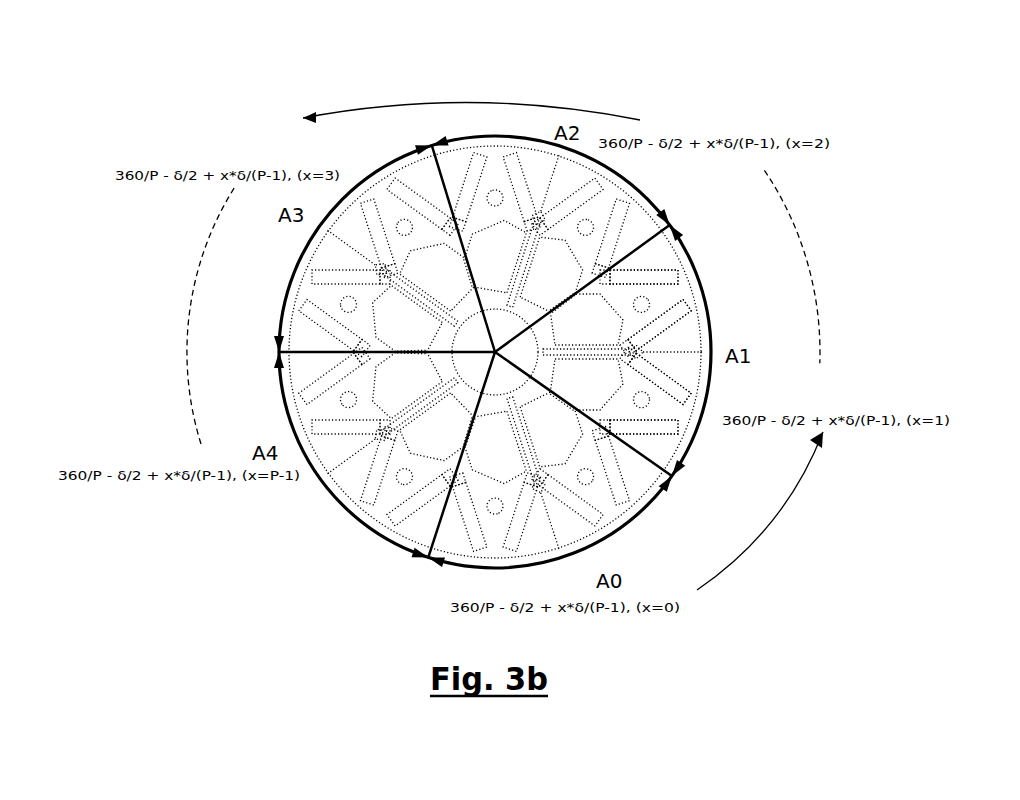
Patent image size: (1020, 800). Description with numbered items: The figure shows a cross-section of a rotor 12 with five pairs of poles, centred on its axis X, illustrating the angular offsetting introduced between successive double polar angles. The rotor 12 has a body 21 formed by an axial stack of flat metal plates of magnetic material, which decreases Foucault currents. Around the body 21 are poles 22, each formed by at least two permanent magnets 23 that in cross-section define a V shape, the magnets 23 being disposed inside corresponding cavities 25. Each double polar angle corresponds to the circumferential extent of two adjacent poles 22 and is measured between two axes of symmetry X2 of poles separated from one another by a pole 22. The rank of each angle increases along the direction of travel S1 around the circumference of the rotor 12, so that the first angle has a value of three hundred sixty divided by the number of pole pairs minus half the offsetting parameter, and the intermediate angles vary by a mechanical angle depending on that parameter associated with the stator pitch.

The rotor 12 is at (163, 300).
The body 21 is at (428, 522).
The poles 22 is at (688, 334).
The permanent magnets 23 is at (682, 405).
The cavities 25 is at (654, 258).
The axis X is at (495, 352).
The axes of symmetry X2 is at (443, 182).
The direction of travel S1 is at (838, 244).